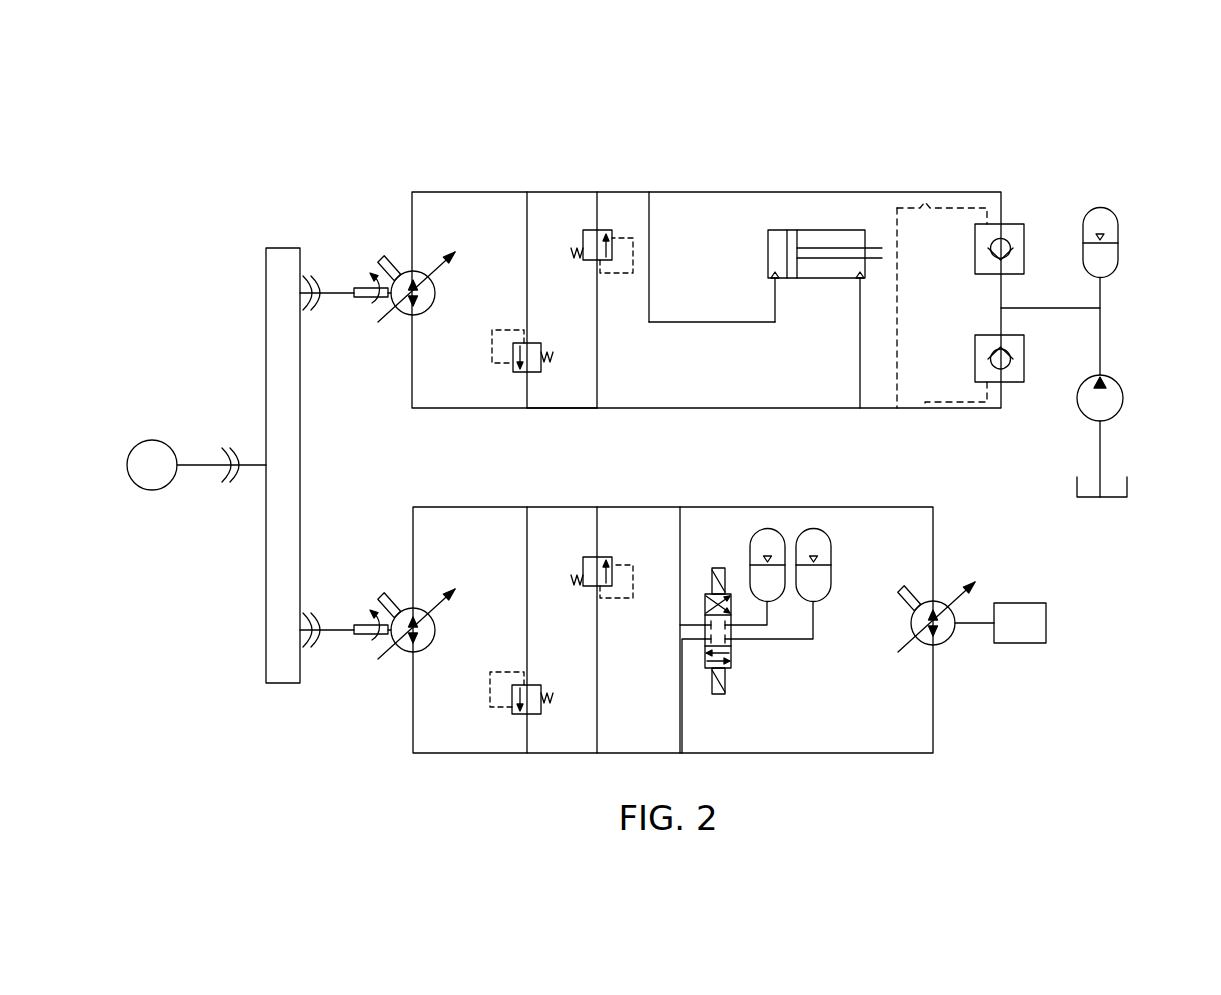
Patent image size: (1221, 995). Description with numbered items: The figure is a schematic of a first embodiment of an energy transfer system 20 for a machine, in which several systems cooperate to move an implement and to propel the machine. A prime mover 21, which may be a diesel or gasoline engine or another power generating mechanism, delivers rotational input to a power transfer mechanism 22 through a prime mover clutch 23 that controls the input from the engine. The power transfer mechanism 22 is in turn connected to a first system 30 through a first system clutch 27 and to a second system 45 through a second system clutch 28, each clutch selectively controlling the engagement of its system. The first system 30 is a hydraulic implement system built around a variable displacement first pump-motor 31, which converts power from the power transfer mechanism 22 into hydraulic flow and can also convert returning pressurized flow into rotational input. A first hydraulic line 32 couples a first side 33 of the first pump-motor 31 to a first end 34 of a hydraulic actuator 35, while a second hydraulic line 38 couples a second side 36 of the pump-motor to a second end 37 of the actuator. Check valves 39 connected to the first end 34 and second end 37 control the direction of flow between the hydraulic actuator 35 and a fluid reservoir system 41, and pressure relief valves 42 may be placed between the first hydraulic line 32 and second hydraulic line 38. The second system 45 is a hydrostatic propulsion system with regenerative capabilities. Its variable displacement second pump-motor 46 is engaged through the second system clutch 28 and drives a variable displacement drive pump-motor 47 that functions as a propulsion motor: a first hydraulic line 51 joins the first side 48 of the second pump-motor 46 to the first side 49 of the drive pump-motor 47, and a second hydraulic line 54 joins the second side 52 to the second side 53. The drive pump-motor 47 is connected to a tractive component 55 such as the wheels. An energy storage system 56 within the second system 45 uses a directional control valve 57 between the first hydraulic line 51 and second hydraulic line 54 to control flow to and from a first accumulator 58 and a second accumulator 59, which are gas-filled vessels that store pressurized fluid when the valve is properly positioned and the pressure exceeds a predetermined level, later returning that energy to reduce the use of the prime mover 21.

The energy transfer system 20 is at (420, 130).
The prime mover 21 is at (140, 450).
The power transfer mechanism 22 is at (281, 683).
The prime mover clutch 23 is at (224, 481).
The first system clutch 27 is at (317, 278).
The second system clutch 28 is at (318, 613).
The first system 30 is at (723, 180).
The first pump-motor 31 is at (437, 293).
The first hydraulic line 32 is at (558, 192).
The first side 33 is at (413, 270).
The first end 34 is at (776, 280).
The hydraulic actuator 35 is at (818, 230).
The second side 36 is at (413, 314).
The second end 37 is at (860, 278).
The second hydraulic line 38 is at (551, 409).
The check valves 39 is at (1015, 224).
The fluid reservoir system 41 is at (1133, 290).
The pressure relief valves 42 is at (596, 262).
The second system 45 is at (840, 768).
The second pump-motor 46 is at (437, 632).
The drive pump-motor 47 is at (943, 642).
The first side 48 is at (415, 605).
The first side 49 is at (934, 600).
The first hydraulic line 51 is at (745, 506).
The second side 52 is at (413, 653).
The second side 53 is at (931, 655).
The second hydraulic line 54 is at (551, 754).
The tractive component 55 is at (1008, 636).
The energy storage system 56 is at (778, 655).
The directional control valve 57 is at (733, 659).
The first accumulator 58 is at (757, 537).
The second accumulator 59 is at (828, 540).